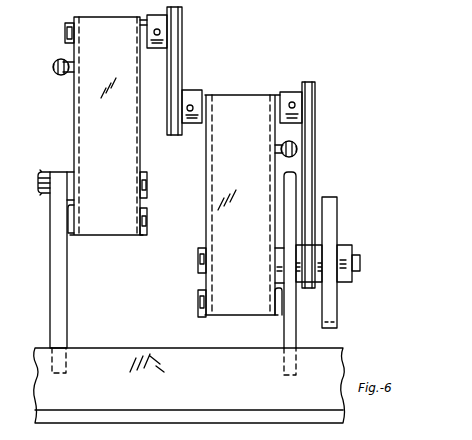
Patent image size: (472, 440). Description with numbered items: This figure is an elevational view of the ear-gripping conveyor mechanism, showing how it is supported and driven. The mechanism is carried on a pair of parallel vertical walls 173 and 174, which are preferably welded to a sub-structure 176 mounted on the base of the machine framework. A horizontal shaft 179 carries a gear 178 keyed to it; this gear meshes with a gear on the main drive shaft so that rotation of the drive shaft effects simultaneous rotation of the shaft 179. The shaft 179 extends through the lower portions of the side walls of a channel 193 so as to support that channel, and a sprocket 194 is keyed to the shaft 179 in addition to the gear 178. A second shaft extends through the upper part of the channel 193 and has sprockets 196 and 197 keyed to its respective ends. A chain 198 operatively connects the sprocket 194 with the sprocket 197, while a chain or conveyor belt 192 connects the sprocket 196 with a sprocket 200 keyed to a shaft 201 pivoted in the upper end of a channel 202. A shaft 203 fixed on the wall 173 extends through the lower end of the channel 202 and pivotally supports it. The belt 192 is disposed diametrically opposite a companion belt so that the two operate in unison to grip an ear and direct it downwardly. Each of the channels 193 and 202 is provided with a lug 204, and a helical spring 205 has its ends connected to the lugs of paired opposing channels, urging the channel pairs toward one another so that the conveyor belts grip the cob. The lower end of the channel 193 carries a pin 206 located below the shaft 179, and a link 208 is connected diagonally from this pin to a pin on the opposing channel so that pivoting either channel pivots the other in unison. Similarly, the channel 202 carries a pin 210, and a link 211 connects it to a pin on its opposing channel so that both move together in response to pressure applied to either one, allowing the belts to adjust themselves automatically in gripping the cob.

The vertical wall 173 is at (60, 303).
The vertical wall 174 is at (297, 341).
The sub-structure 176 is at (105, 358).
The gear 178 is at (332, 218).
The horizontal shaft 179 is at (360, 264).
The chain or conveyor belt 192 is at (178, 60).
The channel 193 is at (216, 213).
The sprocket 194 is at (308, 288).
The sprocket 196 is at (173, 136).
The sprocket 197 is at (310, 103).
The chain 198 is at (313, 177).
The sprocket 200 is at (141, 22).
The shaft 201 is at (65, 32).
The channel 202 is at (112, 218).
The shaft 203 is at (148, 183).
The lug 204 is at (67, 76).
The helical spring 205 is at (56, 64).
The pin 206 is at (197, 302).
The link 208 is at (277, 316).
The pin 210 is at (148, 228).
The link 211 is at (72, 238).